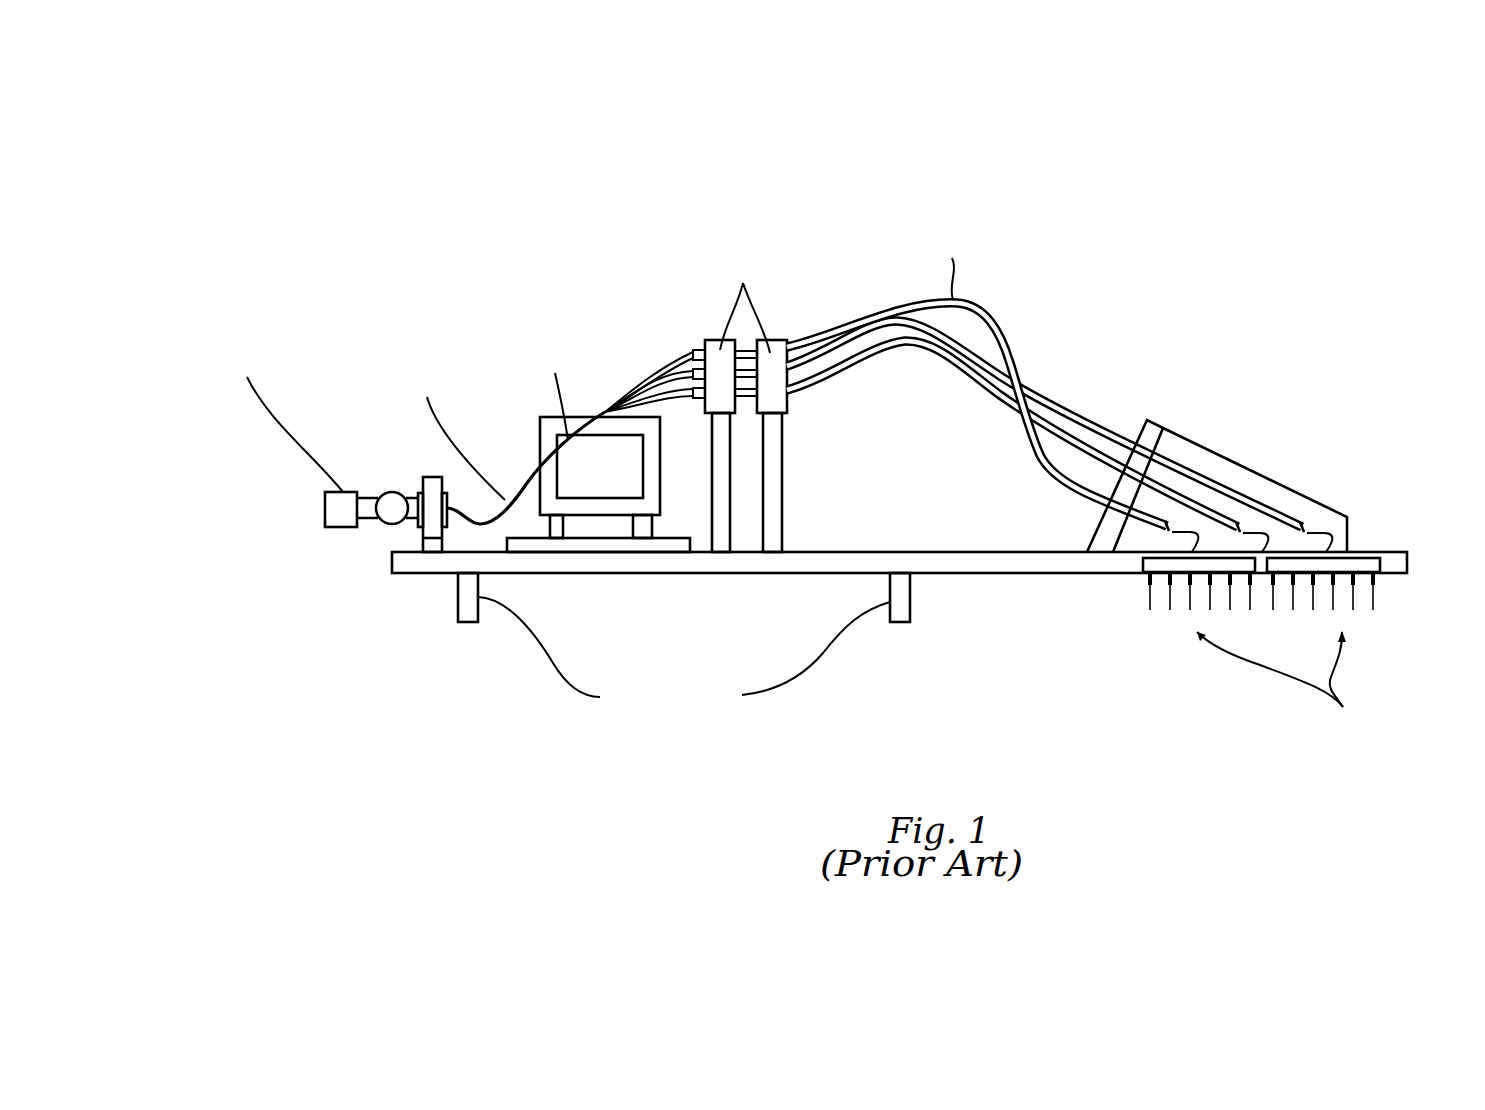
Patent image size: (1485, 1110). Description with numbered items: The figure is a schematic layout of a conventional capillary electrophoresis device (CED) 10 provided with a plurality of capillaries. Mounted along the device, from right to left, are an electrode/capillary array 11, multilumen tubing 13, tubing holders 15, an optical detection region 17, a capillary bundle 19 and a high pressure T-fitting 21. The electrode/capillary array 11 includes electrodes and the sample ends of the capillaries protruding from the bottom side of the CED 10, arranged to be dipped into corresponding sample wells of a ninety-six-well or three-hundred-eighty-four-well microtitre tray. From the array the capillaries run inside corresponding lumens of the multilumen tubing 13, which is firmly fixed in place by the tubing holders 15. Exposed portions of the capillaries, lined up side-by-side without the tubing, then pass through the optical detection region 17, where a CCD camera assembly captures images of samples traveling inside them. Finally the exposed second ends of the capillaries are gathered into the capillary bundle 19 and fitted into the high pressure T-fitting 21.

The capillary electrophoresis device 10 is at (1311, 125).
The electrode/capillary array 11 is at (1357, 803).
The multilumen tubing 13 is at (953, 167).
The tubing holders 15 is at (750, 190).
The optical detection region 17 is at (558, 233).
The capillary bundle 19 is at (422, 297).
The high pressure T-fitting 21 is at (198, 282).